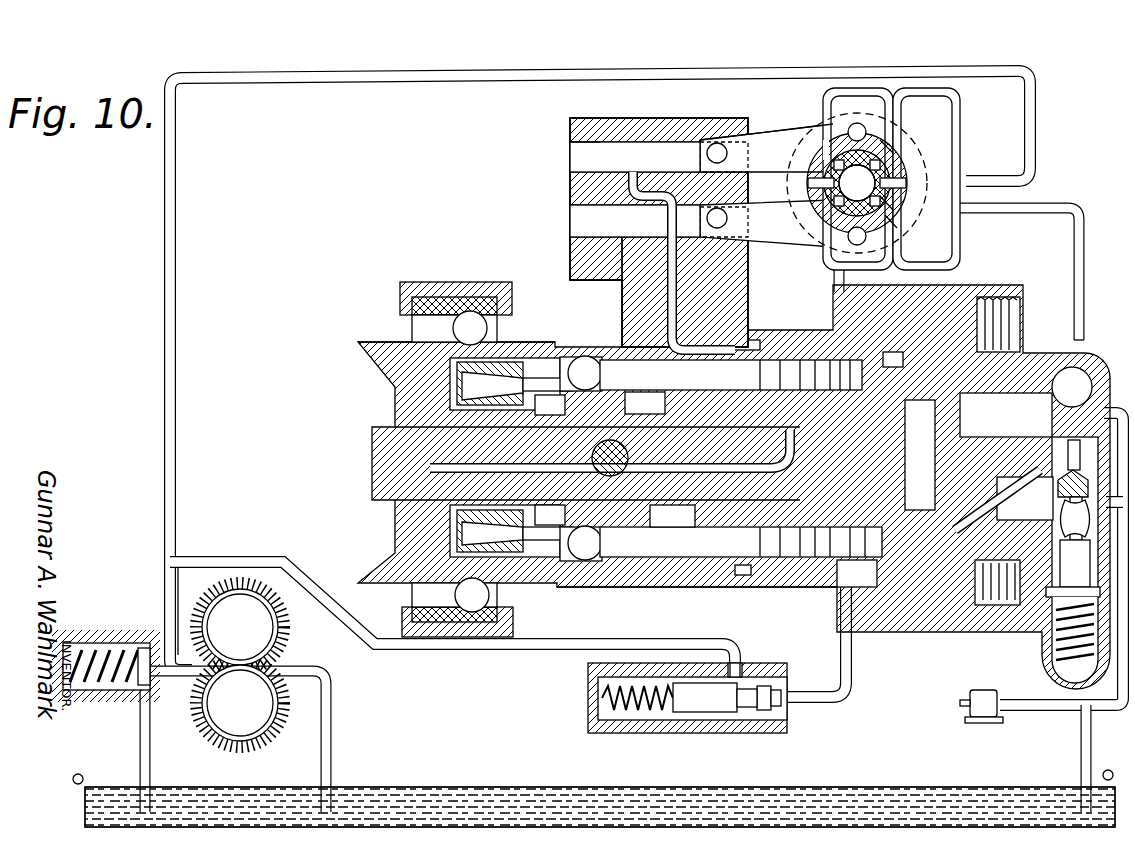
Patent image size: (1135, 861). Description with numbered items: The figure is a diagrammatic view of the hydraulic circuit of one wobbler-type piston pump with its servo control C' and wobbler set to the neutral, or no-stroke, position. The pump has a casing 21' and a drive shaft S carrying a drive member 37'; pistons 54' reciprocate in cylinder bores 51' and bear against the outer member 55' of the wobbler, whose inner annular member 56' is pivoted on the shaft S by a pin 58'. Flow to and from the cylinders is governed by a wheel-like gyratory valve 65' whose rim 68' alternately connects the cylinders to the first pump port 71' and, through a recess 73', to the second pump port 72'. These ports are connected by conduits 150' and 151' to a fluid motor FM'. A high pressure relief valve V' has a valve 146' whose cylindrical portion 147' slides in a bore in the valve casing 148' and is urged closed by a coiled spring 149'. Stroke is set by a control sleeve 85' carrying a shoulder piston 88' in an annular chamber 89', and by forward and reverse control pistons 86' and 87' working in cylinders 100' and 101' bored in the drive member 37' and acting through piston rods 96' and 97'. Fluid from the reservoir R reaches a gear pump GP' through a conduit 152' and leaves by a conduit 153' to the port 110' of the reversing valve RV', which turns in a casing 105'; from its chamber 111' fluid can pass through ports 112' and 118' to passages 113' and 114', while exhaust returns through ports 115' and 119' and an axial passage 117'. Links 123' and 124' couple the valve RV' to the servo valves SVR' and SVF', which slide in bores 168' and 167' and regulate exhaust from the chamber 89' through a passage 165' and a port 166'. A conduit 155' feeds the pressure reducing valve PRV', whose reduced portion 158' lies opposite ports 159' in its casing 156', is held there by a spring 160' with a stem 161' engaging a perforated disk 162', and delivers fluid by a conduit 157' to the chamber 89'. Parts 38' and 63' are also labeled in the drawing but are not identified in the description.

The conduit 153' is at (609, 370).
The conduit 155' is at (452, 630).
The conduit 157' is at (831, 642).
The conduit 151' is at (1062, 612).
The conduit 152' is at (265, 741).
The port 115' is at (816, 257).
The link 123' is at (921, 274).
The reservoir R is at (858, 790).
The conduit 150' is at (552, 677).
The gear pump GP' is at (255, 657).
The pump shaft S is at (453, 453).
The control piston 86' is at (576, 402).
The control piston 87' is at (576, 528).
The drive member 37' is at (452, 325).
The cylinder 101' is at (464, 531).
The cylinder 100' is at (493, 367).
The casing 21' is at (456, 442).
The ball bearing 38' is at (483, 433).
The piston rod 96' is at (581, 354).
The outer member of wobbler 55' is at (581, 567).
The piston 54' is at (741, 458).
The passage 114' is at (687, 363).
The passage 113' is at (777, 309).
The port 110' is at (775, 309).
The inner annular member 56' is at (550, 409).
The pin 58' is at (652, 408).
The piston rod 97' is at (547, 521).
The control sleeve 85' is at (697, 605).
The shoulder piston 88' is at (727, 592).
The annular chamber 89' is at (751, 463).
The cylinder bore 51' is at (837, 577).
The wheel-like valve 65' is at (888, 352).
The spring 63' is at (1015, 324).
The second pump port 72' is at (1063, 368).
The rim 68' is at (980, 415).
The recess 73' is at (950, 455).
The casing 105' is at (1066, 508).
The valve 146' is at (1025, 498).
The cylindrical portion 147' is at (1003, 510).
The valve casing 148' is at (997, 609).
The high pressure safety valve V' is at (1080, 467).
The first pump port 71' is at (1054, 518).
The coiled spring 149' is at (1052, 640).
The servo valve SVF' is at (701, 217).
The servo valve SVR' is at (678, 240).
The port 166' is at (635, 164).
The bore 168' is at (613, 221).
The bore 167' is at (563, 170).
The exhaust passage 165' is at (653, 261).
The servo control C' is at (909, 179).
The reversing valve RV' is at (862, 183).
The port 119' is at (806, 119).
The link 124' is at (766, 119).
The valve port 112' is at (908, 128).
The axial passage 117' is at (815, 183).
The chamber 111' is at (917, 218).
The port 118' is at (917, 236).
The pressure reducing valve PRV' is at (687, 716).
The spring 160' is at (637, 726).
The valve port 159' is at (734, 721).
The stem 161' is at (795, 713).
The perforated disk 162' is at (800, 687).
The reduced cylindrical portion 158' is at (776, 677).
The casing 156' is at (755, 655).
The fluid motor FM' is at (970, 693).